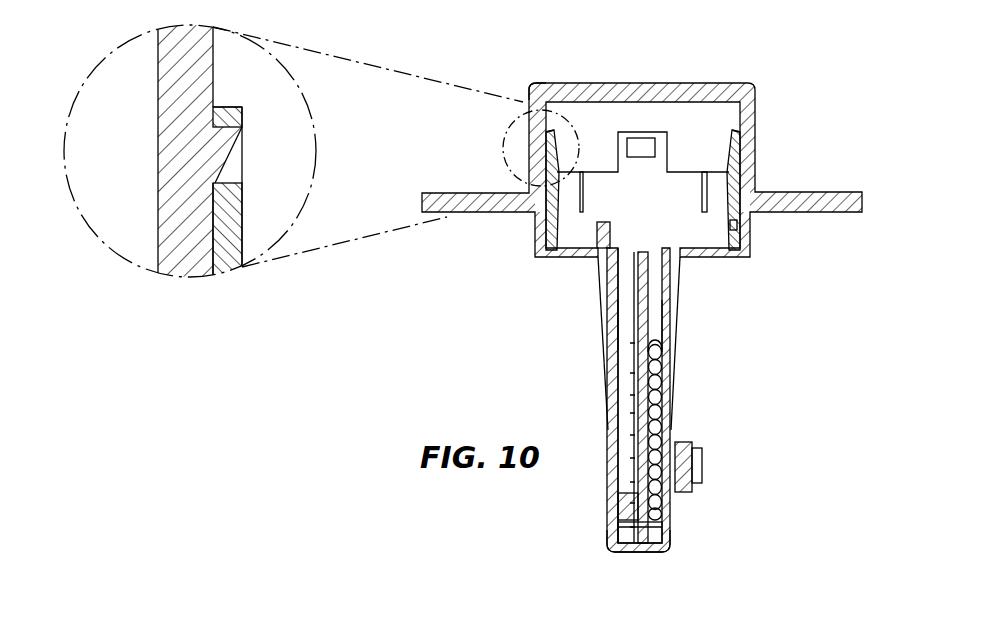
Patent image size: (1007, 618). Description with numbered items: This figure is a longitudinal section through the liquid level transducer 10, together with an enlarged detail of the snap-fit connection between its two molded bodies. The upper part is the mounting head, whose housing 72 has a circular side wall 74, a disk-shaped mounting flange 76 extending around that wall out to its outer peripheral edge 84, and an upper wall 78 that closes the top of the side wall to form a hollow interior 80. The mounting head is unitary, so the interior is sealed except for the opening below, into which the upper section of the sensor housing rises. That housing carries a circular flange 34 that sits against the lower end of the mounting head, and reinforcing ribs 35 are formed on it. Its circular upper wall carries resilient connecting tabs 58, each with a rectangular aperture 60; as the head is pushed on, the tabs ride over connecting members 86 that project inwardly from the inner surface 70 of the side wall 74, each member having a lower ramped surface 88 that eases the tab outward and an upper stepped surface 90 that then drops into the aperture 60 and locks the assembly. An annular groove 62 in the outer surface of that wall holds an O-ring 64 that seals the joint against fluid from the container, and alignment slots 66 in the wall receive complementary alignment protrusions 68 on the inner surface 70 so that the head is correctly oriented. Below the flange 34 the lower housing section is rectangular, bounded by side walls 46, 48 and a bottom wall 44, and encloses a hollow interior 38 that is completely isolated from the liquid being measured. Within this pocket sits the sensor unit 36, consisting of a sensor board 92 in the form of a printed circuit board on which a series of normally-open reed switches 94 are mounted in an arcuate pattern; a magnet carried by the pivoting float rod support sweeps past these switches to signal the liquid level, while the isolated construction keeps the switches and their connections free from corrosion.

The liquid level transducer 10 is at (822, 68).
The circular flange 34 is at (532, 250).
The reinforcing ribs 35 is at (600, 276).
The sensor unit 36 is at (660, 327).
The hollow interior 38 is at (622, 327).
The bottom wall 44 is at (641, 553).
The side wall 46 is at (666, 358).
The side wall 48 is at (617, 385).
The connecting tabs 58 is at (222, 107).
The aperture 60 is at (237, 172).
The annular groove 62 is at (730, 225).
The O-ring 64 is at (752, 224).
The alignment slots 66 is at (553, 178).
The alignment protrusions 68 is at (584, 190).
The inner surface 70 is at (753, 118).
The housing 72 is at (530, 84).
The circular side wall 74 is at (178, 92).
The mounting flange 76 is at (452, 193).
The upper wall 78 is at (602, 83).
The hollow interior 80 is at (681, 121).
The outer peripheral edge 84 is at (863, 203).
The connecting members 86 is at (222, 145).
The lower ramped surface 88 is at (237, 153).
The upper stepped surface 90 is at (240, 110).
The sensor board 92 is at (633, 360).
The reed switches 94 is at (661, 413).